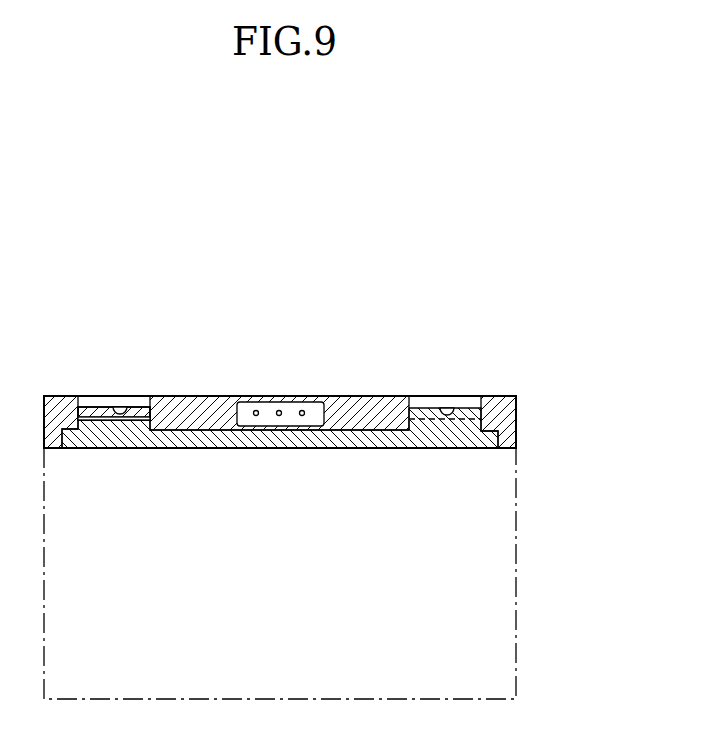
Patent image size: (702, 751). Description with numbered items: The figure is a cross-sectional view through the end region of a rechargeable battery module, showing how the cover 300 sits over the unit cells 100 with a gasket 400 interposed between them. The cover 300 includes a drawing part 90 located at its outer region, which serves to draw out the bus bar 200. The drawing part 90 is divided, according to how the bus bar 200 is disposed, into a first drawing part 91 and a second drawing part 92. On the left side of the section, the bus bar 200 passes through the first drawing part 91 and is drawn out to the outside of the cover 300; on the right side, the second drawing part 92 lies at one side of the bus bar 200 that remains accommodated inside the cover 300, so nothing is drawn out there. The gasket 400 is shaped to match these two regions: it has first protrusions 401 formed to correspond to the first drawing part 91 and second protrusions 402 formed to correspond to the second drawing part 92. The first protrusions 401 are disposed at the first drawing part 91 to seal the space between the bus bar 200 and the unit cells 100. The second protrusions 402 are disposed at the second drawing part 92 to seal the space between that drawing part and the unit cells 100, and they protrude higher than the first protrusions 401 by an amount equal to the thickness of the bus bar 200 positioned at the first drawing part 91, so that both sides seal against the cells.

The unit cells 100 is at (516, 588).
The bus bar 200 is at (92, 412).
The cover 300 is at (497, 402).
The gasket 400 is at (457, 450).
The first protrusions 401 is at (108, 422).
The second protrusions 402 is at (420, 440).
The drawing part 90 is at (221, 360).
The first drawing part 91 is at (135, 414).
The second drawing part 92 is at (463, 410).